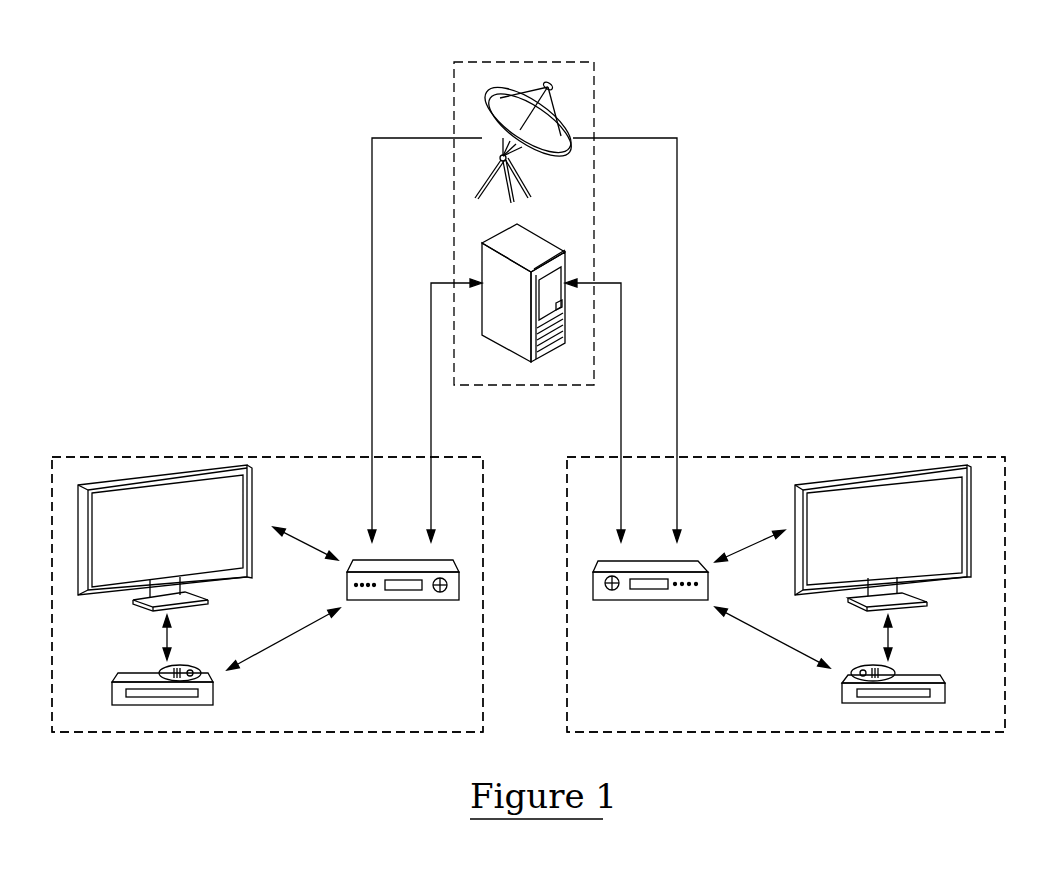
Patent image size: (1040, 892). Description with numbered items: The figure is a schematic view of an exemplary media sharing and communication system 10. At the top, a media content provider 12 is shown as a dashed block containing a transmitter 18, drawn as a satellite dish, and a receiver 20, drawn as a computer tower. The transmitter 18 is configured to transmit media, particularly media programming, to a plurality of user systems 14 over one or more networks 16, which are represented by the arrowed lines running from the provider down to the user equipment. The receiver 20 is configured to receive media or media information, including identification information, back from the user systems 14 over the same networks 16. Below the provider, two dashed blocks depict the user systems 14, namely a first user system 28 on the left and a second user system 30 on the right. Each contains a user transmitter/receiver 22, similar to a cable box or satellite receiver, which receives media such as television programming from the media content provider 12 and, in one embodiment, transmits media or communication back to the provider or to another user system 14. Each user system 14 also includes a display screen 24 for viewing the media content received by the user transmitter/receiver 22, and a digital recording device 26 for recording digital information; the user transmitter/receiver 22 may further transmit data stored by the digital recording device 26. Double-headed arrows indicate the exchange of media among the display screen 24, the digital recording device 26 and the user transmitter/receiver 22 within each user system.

The media sharing and communication system 10 is at (806, 181).
The media content provider 12 is at (462, 62).
The user systems 14 is at (268, 457).
The networks 16 is at (372, 343).
The transmitter 18 is at (493, 128).
The receiver 20 is at (543, 237).
The user transmitter/receiver 22 is at (403, 600).
The display screen 24 is at (252, 497).
The digital recording device 26 is at (213, 694).
The first user system 28 is at (473, 457).
The second user system 30 is at (578, 457).